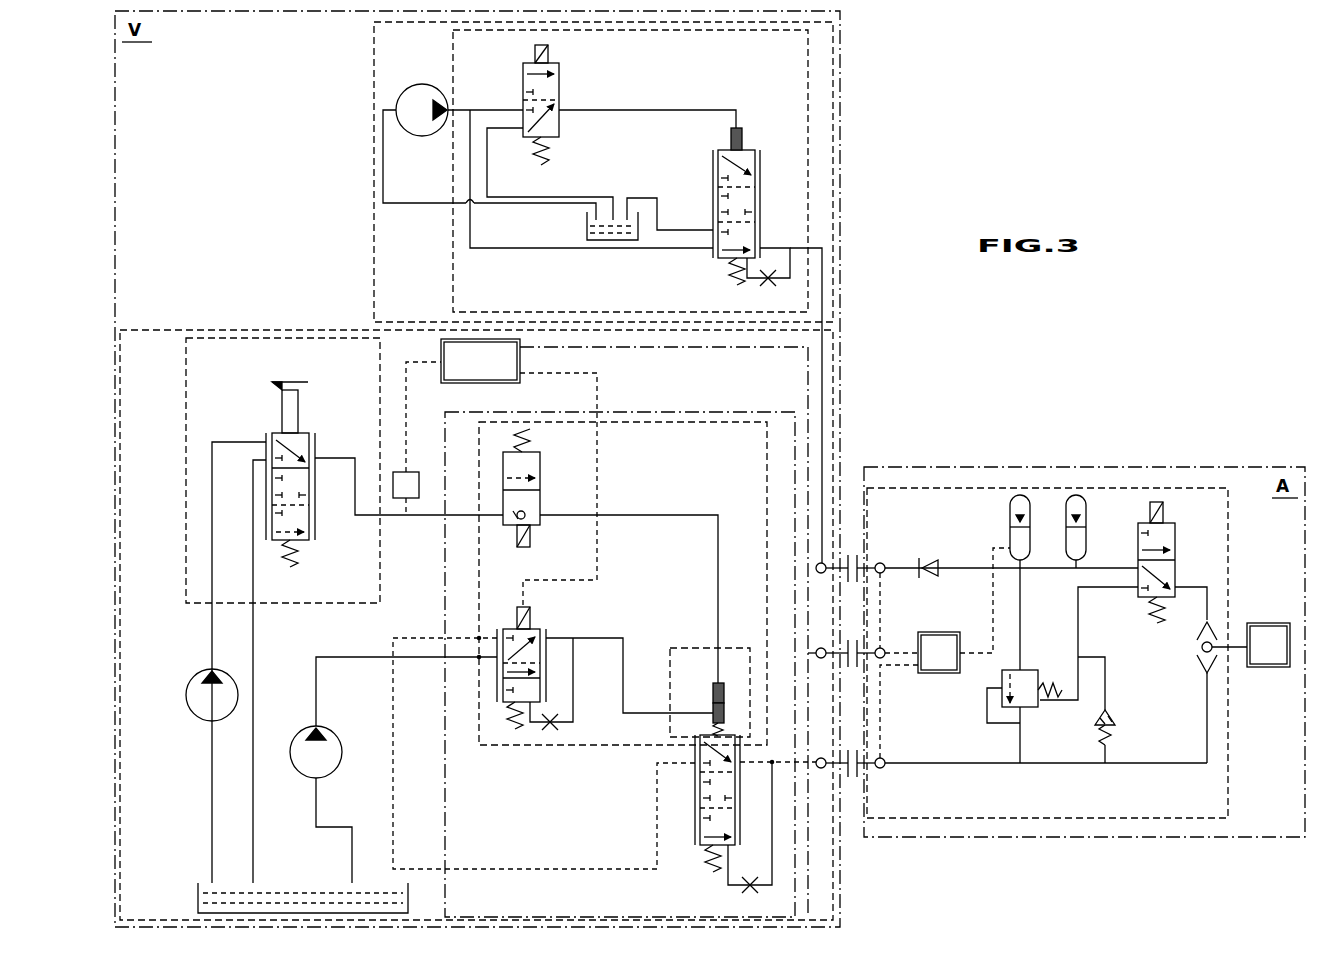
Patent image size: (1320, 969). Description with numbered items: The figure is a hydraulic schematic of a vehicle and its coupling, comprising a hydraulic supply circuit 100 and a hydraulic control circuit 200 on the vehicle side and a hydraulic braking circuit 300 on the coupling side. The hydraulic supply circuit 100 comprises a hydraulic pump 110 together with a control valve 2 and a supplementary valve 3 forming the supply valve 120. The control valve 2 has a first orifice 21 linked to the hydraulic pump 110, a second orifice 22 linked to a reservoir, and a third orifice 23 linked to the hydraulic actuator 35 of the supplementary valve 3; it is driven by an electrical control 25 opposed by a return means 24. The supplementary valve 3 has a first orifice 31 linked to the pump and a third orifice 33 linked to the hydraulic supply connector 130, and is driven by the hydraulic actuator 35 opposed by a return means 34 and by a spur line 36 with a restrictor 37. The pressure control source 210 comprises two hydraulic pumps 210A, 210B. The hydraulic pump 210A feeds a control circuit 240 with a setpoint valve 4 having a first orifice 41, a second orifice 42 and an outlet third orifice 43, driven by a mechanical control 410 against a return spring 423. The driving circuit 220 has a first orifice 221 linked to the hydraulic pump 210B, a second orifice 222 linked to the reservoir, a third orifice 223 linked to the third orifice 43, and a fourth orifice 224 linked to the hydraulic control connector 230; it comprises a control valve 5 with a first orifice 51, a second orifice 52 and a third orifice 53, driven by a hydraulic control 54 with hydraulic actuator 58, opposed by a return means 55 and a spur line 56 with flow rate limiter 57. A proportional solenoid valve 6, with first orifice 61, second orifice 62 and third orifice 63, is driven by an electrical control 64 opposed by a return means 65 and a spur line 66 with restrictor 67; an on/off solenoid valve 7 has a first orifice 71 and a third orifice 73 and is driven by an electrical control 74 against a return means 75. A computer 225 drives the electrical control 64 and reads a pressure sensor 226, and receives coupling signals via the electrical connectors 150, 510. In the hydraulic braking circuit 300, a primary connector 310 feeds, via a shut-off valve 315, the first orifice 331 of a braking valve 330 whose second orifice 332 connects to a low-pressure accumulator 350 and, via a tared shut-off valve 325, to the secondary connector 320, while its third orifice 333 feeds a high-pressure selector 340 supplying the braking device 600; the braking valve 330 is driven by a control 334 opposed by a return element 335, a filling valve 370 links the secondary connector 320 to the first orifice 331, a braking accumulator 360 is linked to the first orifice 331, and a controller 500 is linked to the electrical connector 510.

The control valve 2 is at (552, 111).
The supplementary valve 3 is at (745, 452).
The setpoint valve 4 is at (285, 473).
The control valve 5 is at (728, 811).
The proportional solenoid valve 6 is at (531, 668).
The on/off solenoid valve 7 is at (536, 500).
The first orifice 21 is at (523, 128).
The second orifice 22 is at (523, 110).
The third orifice 23 is at (559, 110).
The return means 24 is at (540, 160).
The electrical control 25 is at (548, 48).
The first orifice 31 is at (713, 256).
The third orifice 33 is at (760, 248).
The return means 34 is at (734, 276).
The hydraulic actuator 35 is at (741, 130).
The spur line 36 is at (790, 278).
The restrictor 37 is at (768, 284).
The first orifice 41 is at (266, 438).
The second orifice 42 is at (266, 472).
The third orifice 43 is at (315, 464).
The first orifice 51 is at (700, 738).
The second orifice 52 is at (713, 230).
The third orifice 53 is at (740, 758).
The hydraulic control 54 is at (711, 675).
The return means 55 is at (714, 862).
The spur line 56 is at (756, 889).
The flow rate limiter 57 is at (750, 877).
The hydraulic actuator 58 is at (724, 690).
The first orifice 61 is at (497, 666).
The second orifice 62 is at (503, 632).
The third orifice 63 is at (546, 640).
The electrical control 64 is at (530, 612).
The return means 65 is at (514, 722).
The spur line 66 is at (573, 664).
The restrictor 67 is at (553, 727).
The first orifice 71 is at (503, 520).
The third orifice 73 is at (540, 514).
The electrical control 74 is at (523, 547).
The return means 75 is at (531, 440).
The hydraulic supply circuit 100 is at (410, 60).
The hydraulic pump 110 is at (432, 134).
The supply valve 120 is at (488, 60).
The hydraulic supply connector 130 is at (821, 574).
The electrical connector 150 is at (821, 659).
The hydraulic control circuit 200 is at (158, 356).
The pressure control source 210 is at (233, 723).
The hydraulic pump 210A is at (198, 700).
The hydraulic pump 210B is at (290, 757).
The driving circuit 220 is at (672, 412).
The first orifice 221 is at (445, 657).
The second orifice 222 is at (445, 638).
The third orifice 223 is at (445, 517).
The fourth orifice 224 is at (795, 766).
The computer 225 is at (495, 371).
The pressure sensor 226 is at (428, 470).
The hydraulic control connector 230 is at (821, 757).
The control circuit 240 is at (186, 470).
The hydraulic braking circuit 300 is at (1220, 812).
The primary connector 310 is at (881, 563).
The shut-off valve 315 is at (927, 562).
The secondary connector 320 is at (880, 768).
The tared shut-off valve 325 is at (1095, 722).
The braking valve 330 is at (1135, 593).
The first orifice 331 is at (1138, 568).
The second orifice 332 is at (1138, 592).
The third orifice 333 is at (1175, 580).
The control 334 is at (1163, 512).
The return element 335 is at (1158, 616).
The high-pressure selector 340 is at (1200, 656).
The low-pressure accumulator 350 is at (1080, 510).
The braking accumulator 360 is at (1017, 510).
The filling valve 370 is at (1002, 680).
The mechanical control 410 is at (288, 382).
The return spring 423 is at (293, 566).
The controller 500 is at (953, 663).
The electrical connector 510 is at (885, 650).
The braking device 600 is at (1283, 654).